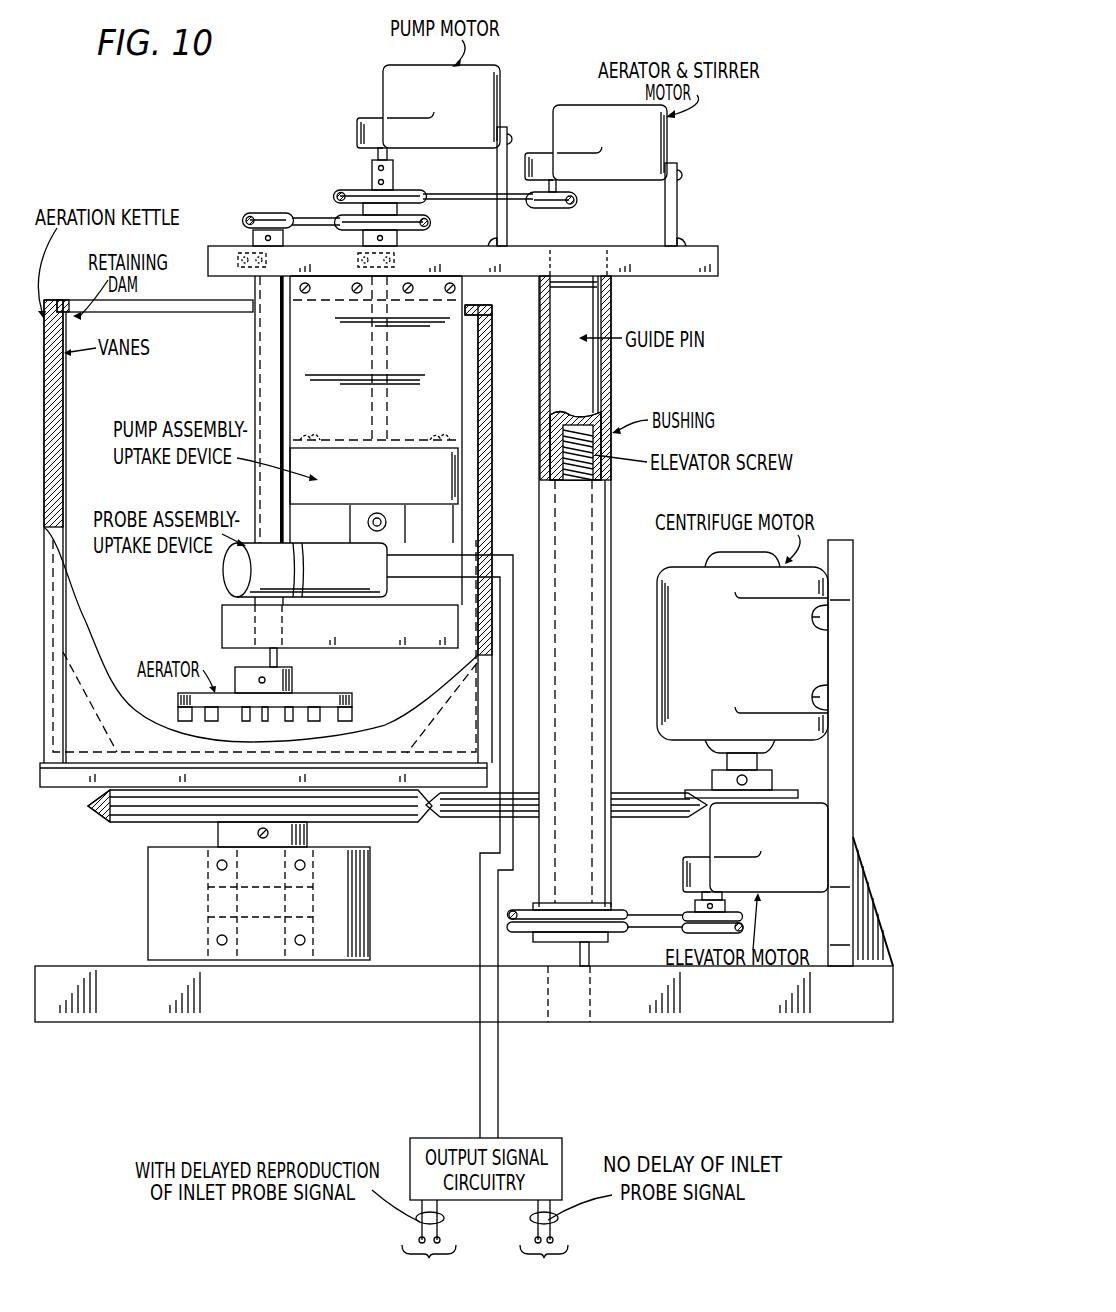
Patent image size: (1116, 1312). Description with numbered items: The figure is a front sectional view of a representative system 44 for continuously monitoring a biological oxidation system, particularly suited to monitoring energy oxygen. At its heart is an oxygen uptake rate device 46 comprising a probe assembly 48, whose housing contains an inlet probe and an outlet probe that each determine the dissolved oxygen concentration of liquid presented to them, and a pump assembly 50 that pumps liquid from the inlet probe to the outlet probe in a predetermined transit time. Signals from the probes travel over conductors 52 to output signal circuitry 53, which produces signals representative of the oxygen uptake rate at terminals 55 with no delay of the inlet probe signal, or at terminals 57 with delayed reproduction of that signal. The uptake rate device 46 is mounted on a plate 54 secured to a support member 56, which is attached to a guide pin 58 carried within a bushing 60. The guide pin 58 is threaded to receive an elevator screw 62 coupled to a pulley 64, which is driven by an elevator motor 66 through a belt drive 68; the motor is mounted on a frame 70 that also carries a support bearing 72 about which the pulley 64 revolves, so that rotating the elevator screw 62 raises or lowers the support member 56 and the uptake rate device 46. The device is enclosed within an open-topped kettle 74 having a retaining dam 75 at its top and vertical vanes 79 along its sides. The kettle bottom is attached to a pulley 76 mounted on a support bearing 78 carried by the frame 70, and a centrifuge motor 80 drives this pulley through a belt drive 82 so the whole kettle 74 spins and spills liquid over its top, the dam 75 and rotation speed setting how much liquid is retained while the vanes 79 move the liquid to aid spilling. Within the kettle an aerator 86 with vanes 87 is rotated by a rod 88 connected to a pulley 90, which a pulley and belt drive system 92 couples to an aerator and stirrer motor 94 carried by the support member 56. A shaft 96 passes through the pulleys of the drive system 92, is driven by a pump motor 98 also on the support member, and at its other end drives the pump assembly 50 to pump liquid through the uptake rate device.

The system 44 is at (706, 239).
The oxygen uptake rate device 46 is at (348, 465).
The probe assembly 48 is at (228, 576).
The pump assembly 50 is at (405, 455).
The conductors 52 is at (472, 889).
The output signal circuitry 53 is at (425, 1138).
The plate 54 is at (450, 348).
The terminals 55 is at (544, 1243).
The support member 56 is at (520, 258).
The terminals 57 is at (429, 1243).
The guide pin 58 is at (596, 375).
The bushing 60 is at (606, 414).
The elevator screw 62 is at (595, 510).
The pulley 64 is at (612, 909).
The elevator motor 66 is at (808, 893).
The belt drive 68 is at (656, 914).
The frame 70 is at (845, 765).
The support bearing 72 is at (590, 955).
The kettle 74 is at (36, 758).
The retaining dam 75 is at (68, 311).
The pulley 76 is at (112, 823).
The support bearing 78 is at (196, 912).
The vanes 79 is at (66, 390).
The centrifuge motor 80 is at (658, 680).
The belt drive 82 is at (646, 793).
The aerator 86 is at (327, 672).
The vanes 87 is at (346, 712).
The rod 88 is at (266, 336).
The pulley 90 is at (276, 212).
The pulley and belt drive system 92 is at (452, 170).
The aerator and stirrer motor 94 is at (587, 105).
The shaft 96 is at (365, 153).
The pump motor 98 is at (496, 66).